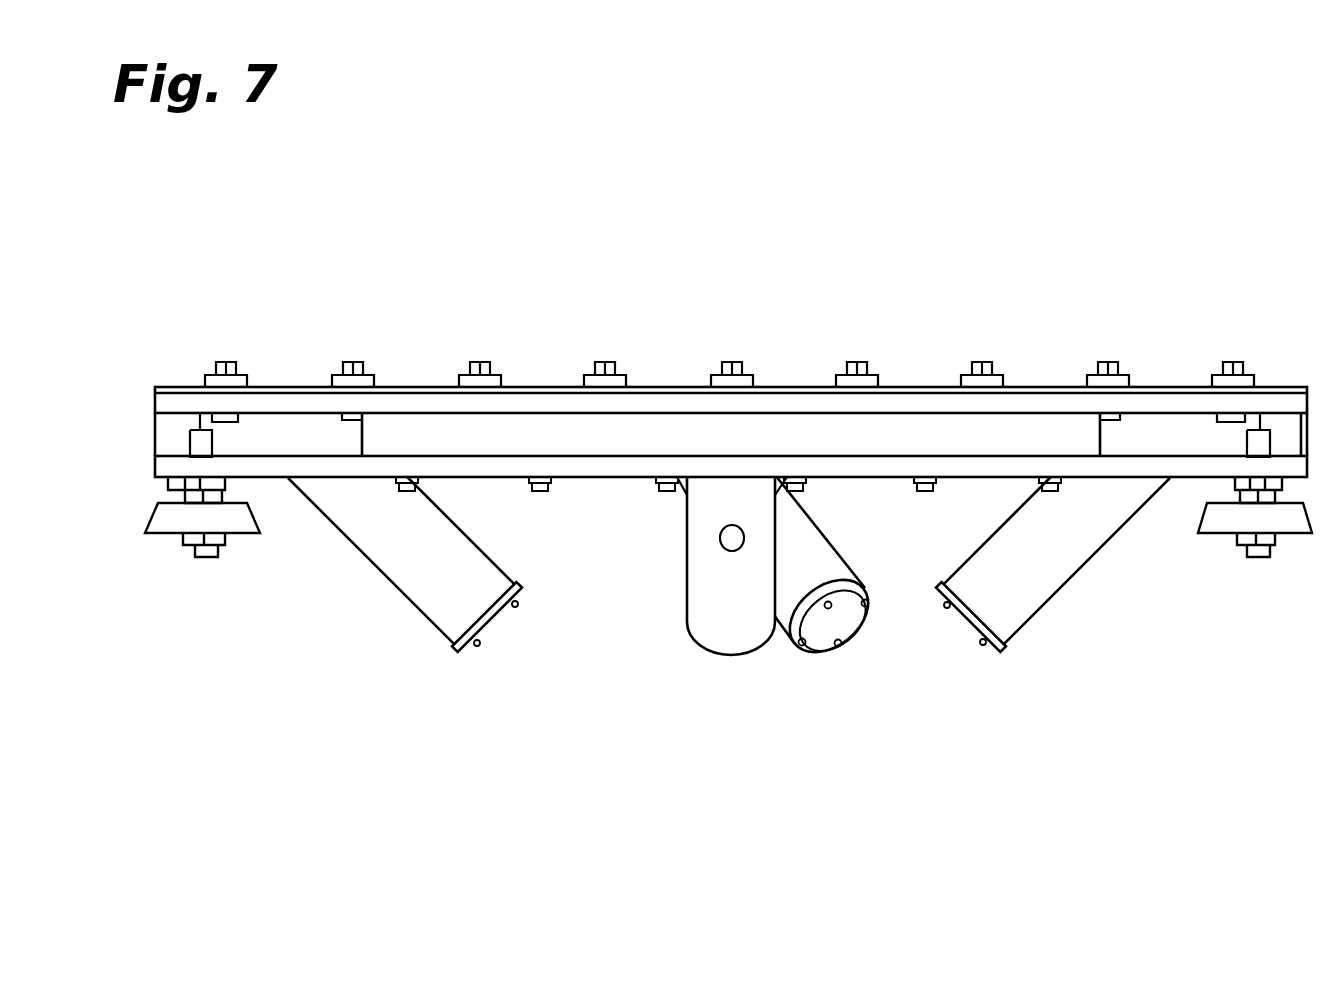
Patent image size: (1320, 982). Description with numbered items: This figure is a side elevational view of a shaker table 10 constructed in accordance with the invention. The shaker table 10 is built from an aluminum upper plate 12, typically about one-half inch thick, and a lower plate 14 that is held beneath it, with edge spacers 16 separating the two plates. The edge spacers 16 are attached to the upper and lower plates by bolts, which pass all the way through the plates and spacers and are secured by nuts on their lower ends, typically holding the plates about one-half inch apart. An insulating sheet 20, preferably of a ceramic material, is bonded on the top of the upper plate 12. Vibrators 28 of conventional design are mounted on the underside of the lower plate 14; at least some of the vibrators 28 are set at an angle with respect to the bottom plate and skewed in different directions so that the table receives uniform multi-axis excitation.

The shaker table 10 is at (813, 244).
The upper plate 12 is at (380, 398).
The lower plate 14 is at (660, 463).
The edge spacers 16 is at (505, 428).
The insulating sheet 20 is at (258, 387).
The vibrators 28 is at (409, 593).